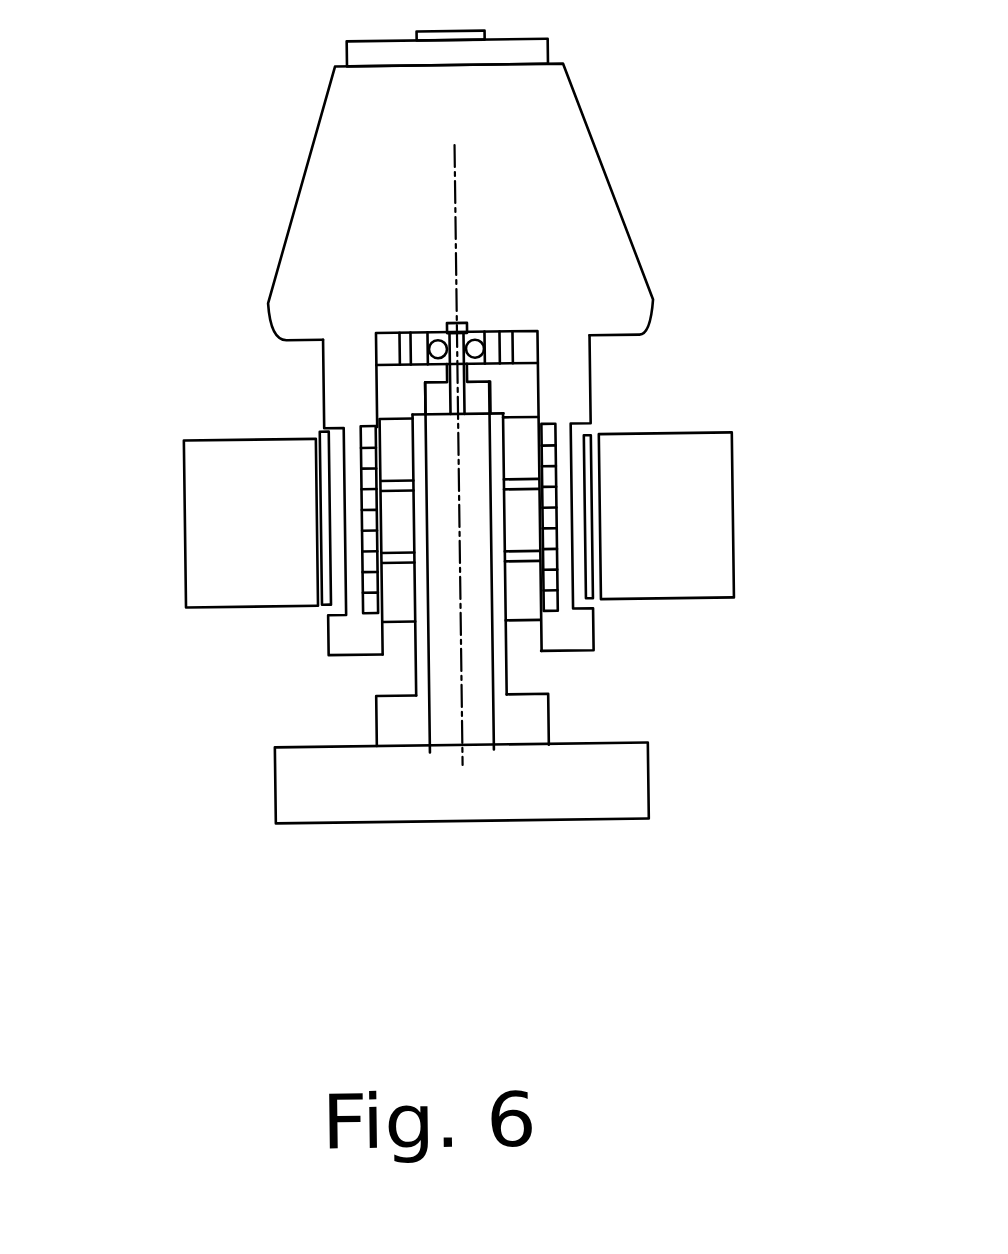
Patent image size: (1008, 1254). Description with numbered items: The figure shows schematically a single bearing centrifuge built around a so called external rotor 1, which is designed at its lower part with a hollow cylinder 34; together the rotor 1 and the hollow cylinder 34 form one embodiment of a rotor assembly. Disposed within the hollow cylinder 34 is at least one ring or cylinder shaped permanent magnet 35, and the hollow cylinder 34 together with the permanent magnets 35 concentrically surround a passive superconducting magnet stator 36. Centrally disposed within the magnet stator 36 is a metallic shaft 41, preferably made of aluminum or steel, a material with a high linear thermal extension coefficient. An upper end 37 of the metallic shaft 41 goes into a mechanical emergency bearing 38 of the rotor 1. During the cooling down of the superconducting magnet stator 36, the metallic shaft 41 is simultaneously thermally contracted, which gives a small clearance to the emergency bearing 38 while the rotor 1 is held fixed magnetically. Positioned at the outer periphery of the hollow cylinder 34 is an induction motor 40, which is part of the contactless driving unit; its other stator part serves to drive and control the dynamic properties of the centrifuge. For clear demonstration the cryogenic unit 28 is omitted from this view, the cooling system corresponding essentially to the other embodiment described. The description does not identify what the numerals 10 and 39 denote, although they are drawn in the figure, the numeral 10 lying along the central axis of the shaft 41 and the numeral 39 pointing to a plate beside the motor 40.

The external rotor 1 is at (583, 210).
The shaft 10 is at (474, 722).
The cryogenic unit 28 is at (603, 784).
The hollow cylinder 34 is at (594, 644).
The permanent magnet 35 is at (372, 446).
The passive superconducting magnet stator 36 is at (406, 602).
The upper end of metallic shaft 37 is at (519, 389).
The mechanical emergency bearing 38 is at (475, 325).
The plate 39 is at (318, 590).
The induction motor 40 is at (207, 510).
The metallic shaft 41 is at (436, 397).